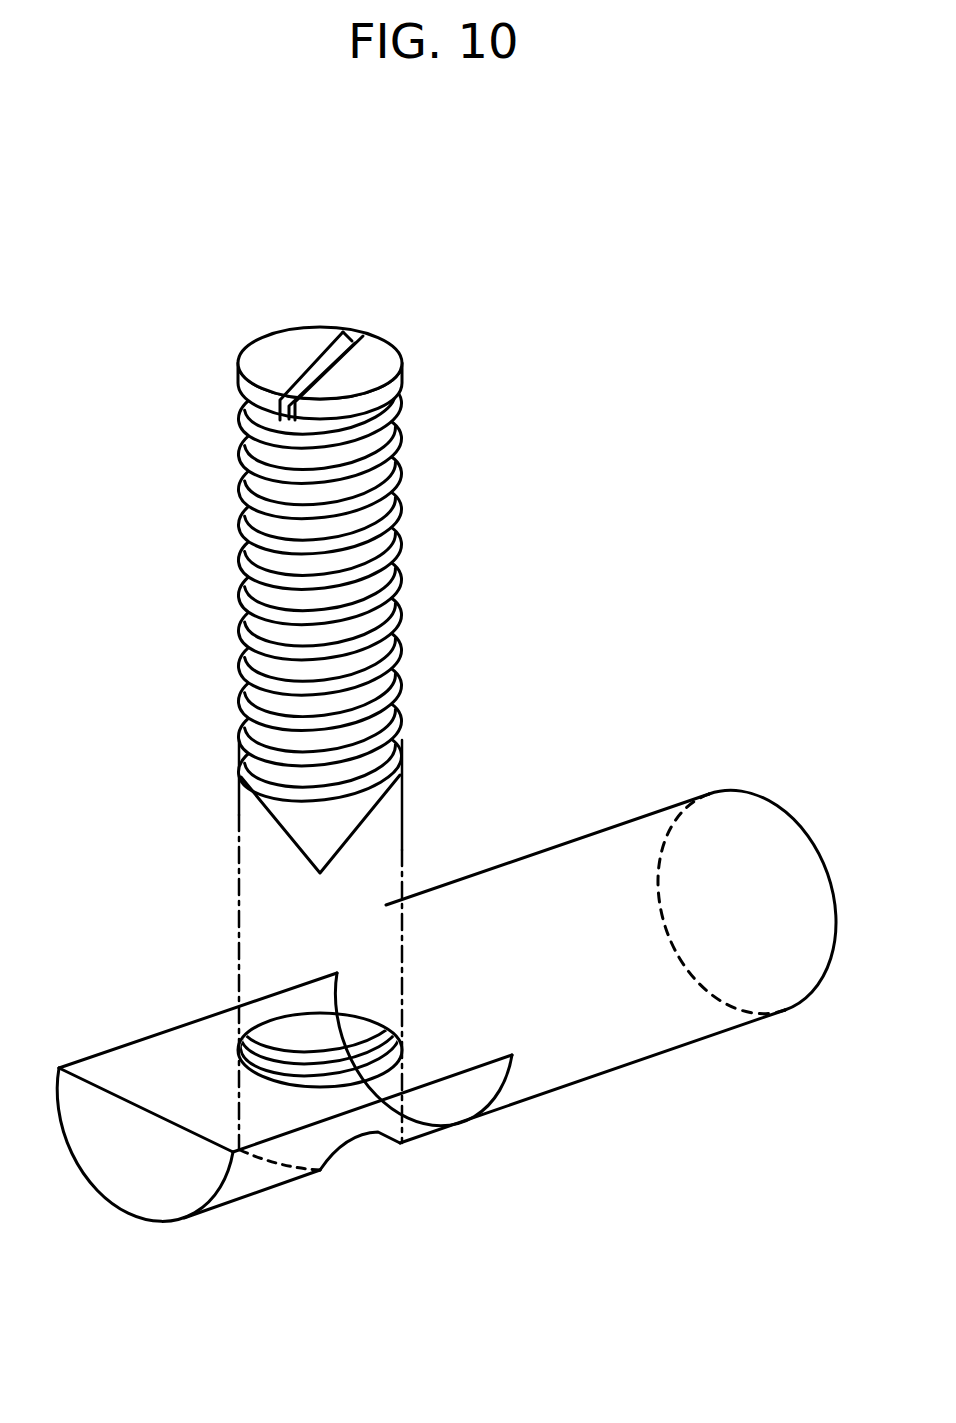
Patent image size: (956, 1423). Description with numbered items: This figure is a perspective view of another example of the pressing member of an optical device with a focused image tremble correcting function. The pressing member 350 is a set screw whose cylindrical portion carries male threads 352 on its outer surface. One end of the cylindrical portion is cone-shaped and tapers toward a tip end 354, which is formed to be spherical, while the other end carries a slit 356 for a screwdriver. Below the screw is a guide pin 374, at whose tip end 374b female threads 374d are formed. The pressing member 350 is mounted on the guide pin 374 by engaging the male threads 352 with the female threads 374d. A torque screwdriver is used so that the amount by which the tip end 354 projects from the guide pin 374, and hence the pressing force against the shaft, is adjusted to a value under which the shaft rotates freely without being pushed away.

The pressing member 350 is at (319, 687).
The male threads 352 is at (383, 612).
The tip end 354 is at (320, 863).
The slit 356 is at (301, 372).
The guide pin 374 is at (446, 1063).
The tip end of guide pin 374b is at (257, 1173).
The female threads 374d is at (322, 1058).